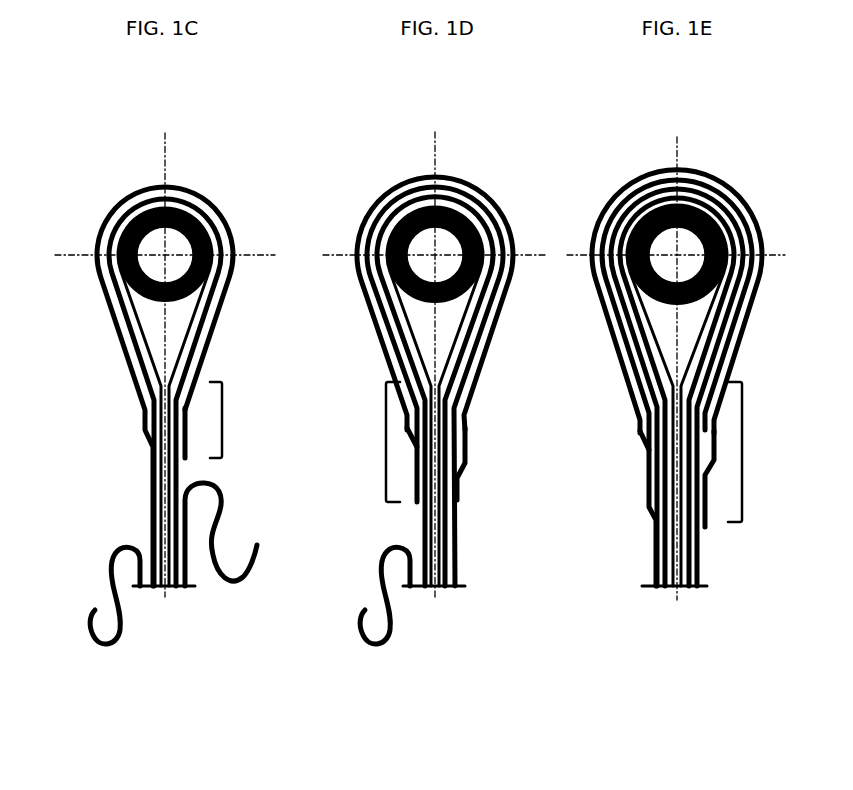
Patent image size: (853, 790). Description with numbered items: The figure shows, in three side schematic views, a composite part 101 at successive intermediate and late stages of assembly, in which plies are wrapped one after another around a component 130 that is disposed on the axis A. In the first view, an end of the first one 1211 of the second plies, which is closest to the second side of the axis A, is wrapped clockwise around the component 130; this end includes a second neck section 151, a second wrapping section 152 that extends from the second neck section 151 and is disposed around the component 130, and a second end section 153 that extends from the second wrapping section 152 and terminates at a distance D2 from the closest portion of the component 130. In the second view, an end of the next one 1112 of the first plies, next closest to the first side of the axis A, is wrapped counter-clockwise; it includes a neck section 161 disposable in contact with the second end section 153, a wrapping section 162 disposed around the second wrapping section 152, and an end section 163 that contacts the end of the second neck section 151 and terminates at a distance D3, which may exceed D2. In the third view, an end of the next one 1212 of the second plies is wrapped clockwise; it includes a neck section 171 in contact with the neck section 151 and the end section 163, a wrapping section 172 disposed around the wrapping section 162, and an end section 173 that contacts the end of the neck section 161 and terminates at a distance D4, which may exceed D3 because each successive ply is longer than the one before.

In FIG. 1E, the composite part 101 is at (674, 340).
In FIG. 1C, the component 130 is at (176, 240).
In FIG. 1D, the component 130 is at (444, 232).
In FIG. 1E, the component 130 is at (686, 233).
In FIG. 1C, the axis A is at (164, 144).
In FIG. 1D, the axis A is at (434, 144).
In FIG. 1E, the axis A is at (675, 143).
In FIG. 1C, the second wrapping section 152 is at (117, 322).
In FIG. 1C, the second end section 153 is at (186, 417).
In FIG. 1C, the second neck section 151 is at (153, 497).
In FIG. 1C, the first one of the second plies 1211 is at (116, 397).
In FIG. 1C, the distance D2 is at (222, 420).
In FIG. 1D, the wrapping section 162 is at (368, 294).
In FIG. 1D, the end section 163 is at (407, 418).
In FIG. 1D, the neck section 161 is at (467, 422).
In FIG. 1D, the next one of the first plies 1112 is at (486, 489).
In FIG. 1D, the distance D3 is at (386, 441).
In FIG. 1E, the wrapping section 172 is at (735, 342).
In FIG. 1E, the neck section 171 is at (650, 480).
In FIG. 1E, the end section 173 is at (714, 447).
In FIG. 1E, the next one of the second plies 1212 is at (636, 403).
In FIG. 1E, the distance D4 is at (744, 453).